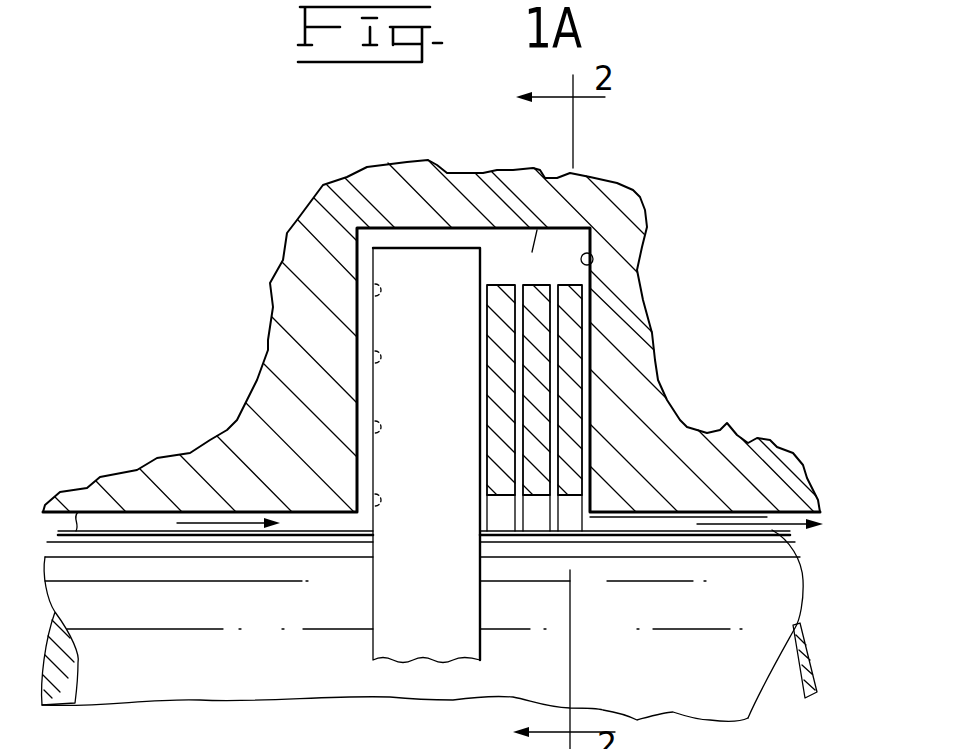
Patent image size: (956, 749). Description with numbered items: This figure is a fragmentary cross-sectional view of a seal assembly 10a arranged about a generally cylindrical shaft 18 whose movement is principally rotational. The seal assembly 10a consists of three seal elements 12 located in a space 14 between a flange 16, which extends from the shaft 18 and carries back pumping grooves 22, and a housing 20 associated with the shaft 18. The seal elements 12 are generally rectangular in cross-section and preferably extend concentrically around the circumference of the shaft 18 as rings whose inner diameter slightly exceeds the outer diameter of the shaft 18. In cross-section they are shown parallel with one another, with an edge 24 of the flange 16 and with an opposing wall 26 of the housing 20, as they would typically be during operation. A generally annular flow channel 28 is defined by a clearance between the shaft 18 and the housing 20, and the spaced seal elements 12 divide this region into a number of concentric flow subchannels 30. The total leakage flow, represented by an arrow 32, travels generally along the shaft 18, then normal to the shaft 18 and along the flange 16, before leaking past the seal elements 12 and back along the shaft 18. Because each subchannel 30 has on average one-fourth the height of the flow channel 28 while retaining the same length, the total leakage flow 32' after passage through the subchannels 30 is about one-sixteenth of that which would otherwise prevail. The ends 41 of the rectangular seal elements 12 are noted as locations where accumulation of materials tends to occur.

The seal assembly 10a is at (535, 510).
The seal elements 12 is at (572, 322).
The space 14 is at (540, 285).
The flange 16 is at (417, 240).
The shaft 18 is at (638, 570).
The housing 20 is at (630, 340).
The back pumping grooves 22 is at (377, 313).
The edge of flange 24 is at (480, 263).
The opposing wall 26 is at (593, 256).
The flow channel 28 is at (147, 520).
The flow subchannels 30 is at (583, 423).
The arrow representing total leakage flow 32 is at (216, 468).
The total leakage flow after passage through subchannels 32' is at (723, 557).
The ends of the elements 41 is at (586, 224).